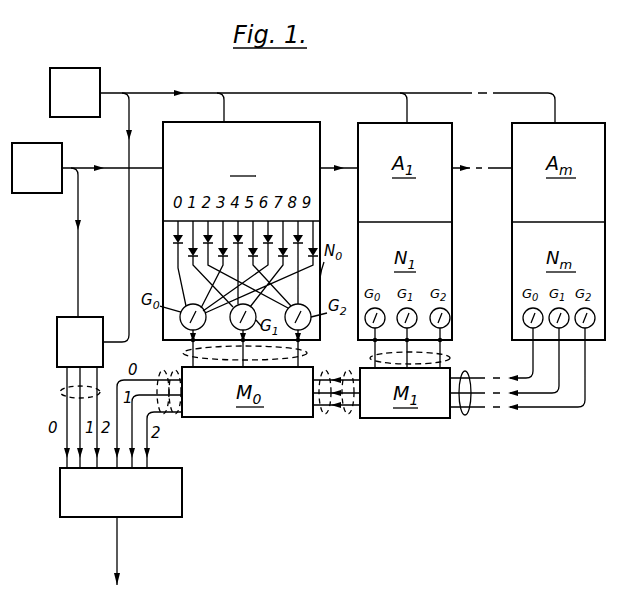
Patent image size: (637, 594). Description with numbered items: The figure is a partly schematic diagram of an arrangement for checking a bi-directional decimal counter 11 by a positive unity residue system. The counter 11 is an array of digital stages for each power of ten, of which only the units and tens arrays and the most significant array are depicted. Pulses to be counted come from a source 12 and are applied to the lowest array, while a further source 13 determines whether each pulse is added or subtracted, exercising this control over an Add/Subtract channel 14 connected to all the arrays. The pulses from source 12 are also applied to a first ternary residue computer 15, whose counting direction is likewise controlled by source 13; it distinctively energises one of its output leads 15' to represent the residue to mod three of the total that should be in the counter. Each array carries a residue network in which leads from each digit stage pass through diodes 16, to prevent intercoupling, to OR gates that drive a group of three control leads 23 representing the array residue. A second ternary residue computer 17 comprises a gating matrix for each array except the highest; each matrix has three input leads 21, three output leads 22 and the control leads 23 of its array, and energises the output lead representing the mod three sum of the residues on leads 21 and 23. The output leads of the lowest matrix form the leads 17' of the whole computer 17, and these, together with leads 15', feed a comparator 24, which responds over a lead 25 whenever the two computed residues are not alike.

The bi-directional decimal counter 11 is at (345, 141).
The pulse source 12 is at (44, 179).
The add/subtract control source 13 is at (82, 103).
The Add/Subtract channel 14 is at (131, 105).
The first ternary residue computer 15 is at (80, 342).
The computer output leads 15' is at (68, 417).
The diodes 16 is at (188, 253).
The second ternary residue computer 17 is at (336, 406).
The output leads of second computer 17' is at (148, 402).
The matrix input leads 21 is at (320, 415).
The matrix output leads 22 is at (356, 432).
The control leads 23 is at (307, 353).
The comparator 24 is at (127, 502).
The comparator output lead 25 is at (117, 540).